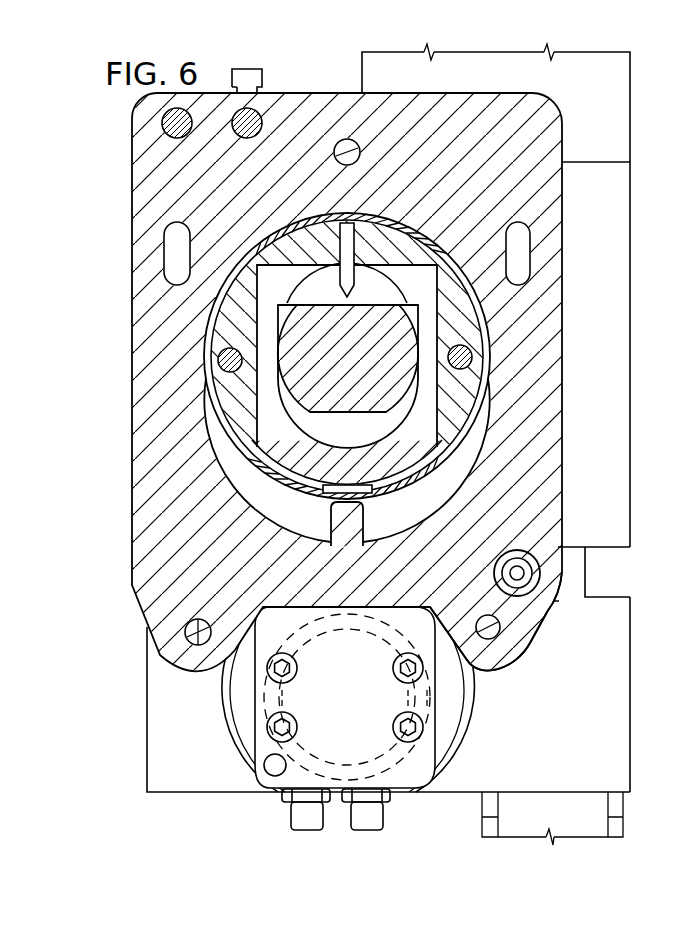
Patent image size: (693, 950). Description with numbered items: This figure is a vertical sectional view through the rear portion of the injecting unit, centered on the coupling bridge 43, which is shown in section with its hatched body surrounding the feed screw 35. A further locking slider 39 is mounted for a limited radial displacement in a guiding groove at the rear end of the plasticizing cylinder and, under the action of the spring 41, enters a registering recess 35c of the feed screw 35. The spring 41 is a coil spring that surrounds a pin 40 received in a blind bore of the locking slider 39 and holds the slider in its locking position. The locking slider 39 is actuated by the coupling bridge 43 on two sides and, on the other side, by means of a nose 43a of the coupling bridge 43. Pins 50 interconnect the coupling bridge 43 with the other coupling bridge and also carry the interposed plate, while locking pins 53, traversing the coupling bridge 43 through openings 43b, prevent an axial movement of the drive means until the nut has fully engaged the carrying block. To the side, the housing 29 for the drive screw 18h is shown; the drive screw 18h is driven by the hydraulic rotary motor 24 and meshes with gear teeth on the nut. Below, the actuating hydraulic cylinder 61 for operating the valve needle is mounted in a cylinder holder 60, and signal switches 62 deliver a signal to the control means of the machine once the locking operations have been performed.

The drive screw 18h is at (586, 562).
The hydraulic rotary motor 24 is at (587, 127).
The housing 29 is at (615, 360).
The feed screw 35 is at (303, 328).
The registering recess 35c is at (327, 300).
The further locking slider 39 is at (420, 427).
The pin 40 is at (354, 250).
The spring 41 is at (356, 270).
The coupling bridge 43 is at (490, 125).
The nose 43a is at (352, 522).
The openings 43b is at (533, 543).
The pins 50 is at (341, 141).
The locking pins 53 is at (532, 580).
The cylinder holder 60 is at (207, 773).
The actuating hydraulic cylinder 61 is at (411, 770).
The signal switches 62 is at (238, 132).